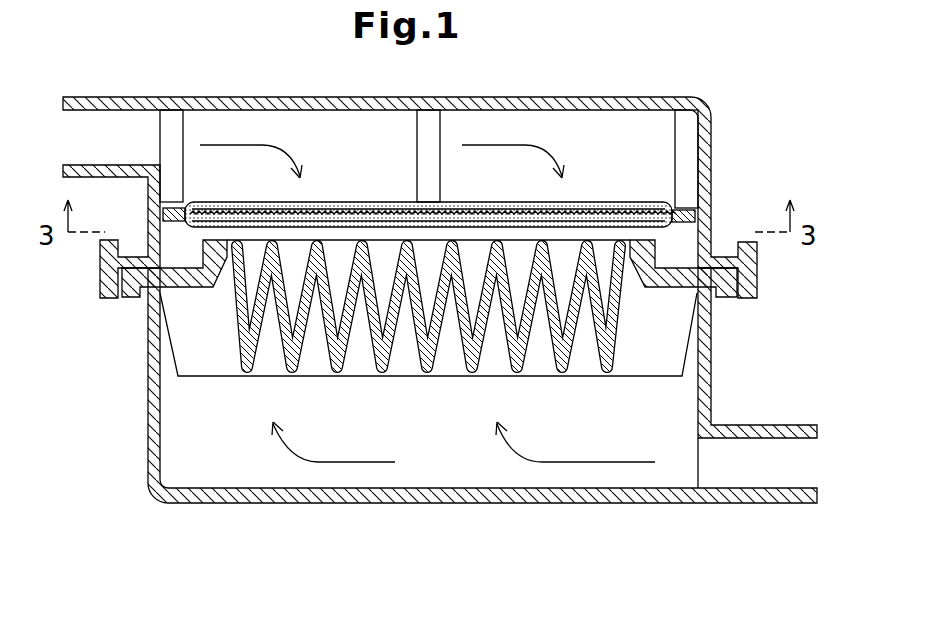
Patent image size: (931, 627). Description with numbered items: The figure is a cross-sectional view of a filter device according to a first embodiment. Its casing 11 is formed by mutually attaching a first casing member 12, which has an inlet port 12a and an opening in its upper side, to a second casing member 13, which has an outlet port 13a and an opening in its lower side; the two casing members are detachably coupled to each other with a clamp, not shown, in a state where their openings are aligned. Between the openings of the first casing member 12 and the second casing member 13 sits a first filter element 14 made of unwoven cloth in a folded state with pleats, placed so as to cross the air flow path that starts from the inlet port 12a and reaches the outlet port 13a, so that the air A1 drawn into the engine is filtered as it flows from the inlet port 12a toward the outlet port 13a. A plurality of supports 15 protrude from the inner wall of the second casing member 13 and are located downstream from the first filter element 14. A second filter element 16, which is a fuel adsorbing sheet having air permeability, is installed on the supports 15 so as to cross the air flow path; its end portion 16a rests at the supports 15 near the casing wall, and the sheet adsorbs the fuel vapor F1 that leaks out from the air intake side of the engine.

The casing 11 is at (411, 281).
The first casing member 12 is at (433, 371).
The inlet port 12a is at (760, 434).
The second casing member 13 is at (403, 180).
The outlet port 13a is at (128, 113).
The first filter element 14 is at (403, 366).
The supports 15 is at (183, 177).
The second filter element 16 is at (476, 193).
The filter sheet end portion 16a is at (690, 225).
The fuel vapor F1 is at (268, 144).
The air A1 is at (584, 462).